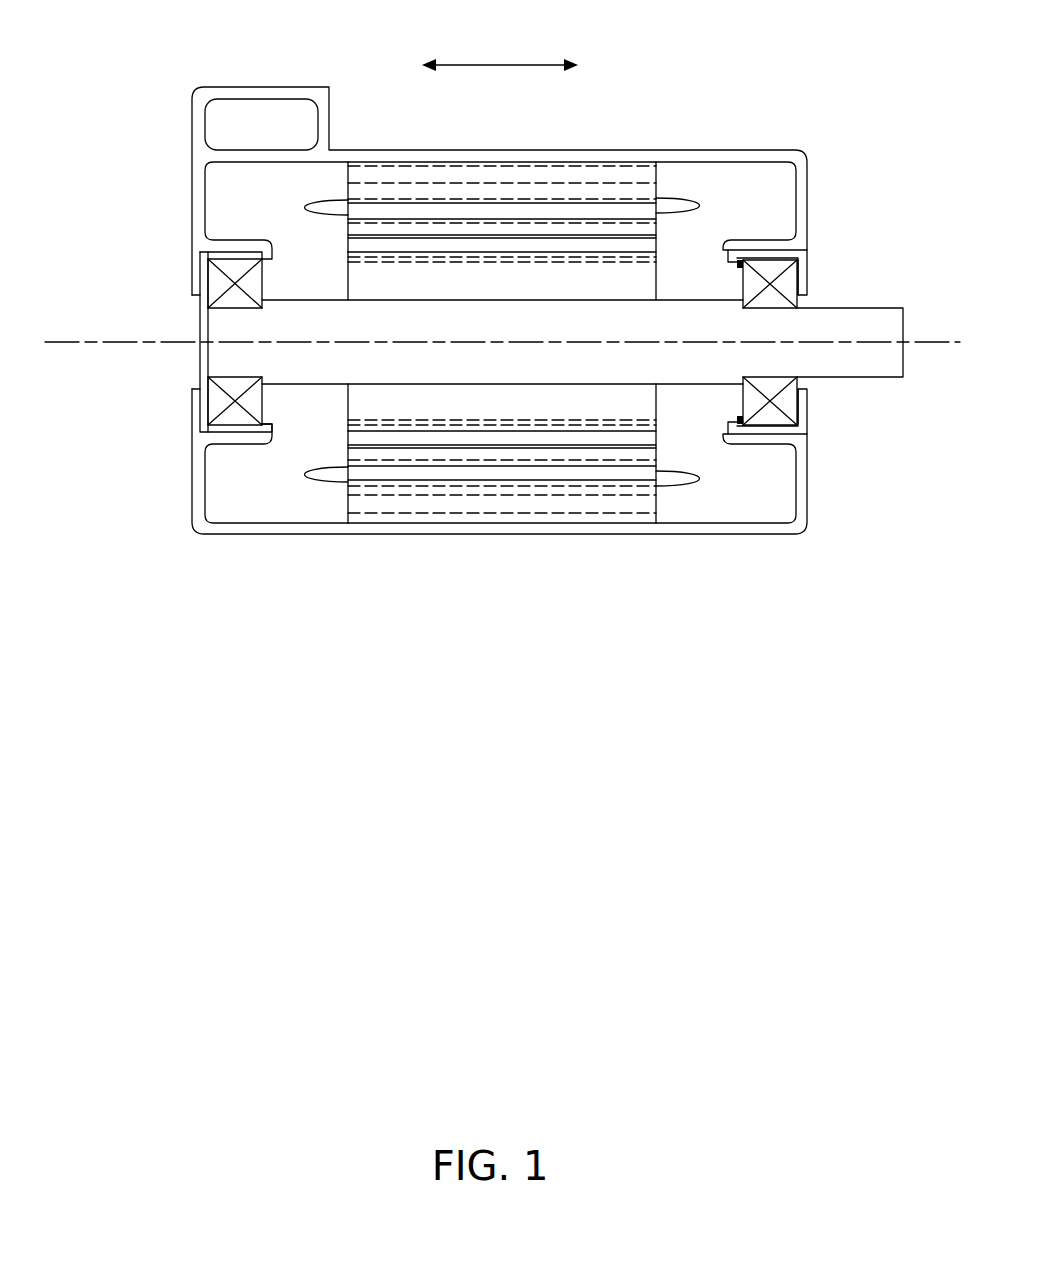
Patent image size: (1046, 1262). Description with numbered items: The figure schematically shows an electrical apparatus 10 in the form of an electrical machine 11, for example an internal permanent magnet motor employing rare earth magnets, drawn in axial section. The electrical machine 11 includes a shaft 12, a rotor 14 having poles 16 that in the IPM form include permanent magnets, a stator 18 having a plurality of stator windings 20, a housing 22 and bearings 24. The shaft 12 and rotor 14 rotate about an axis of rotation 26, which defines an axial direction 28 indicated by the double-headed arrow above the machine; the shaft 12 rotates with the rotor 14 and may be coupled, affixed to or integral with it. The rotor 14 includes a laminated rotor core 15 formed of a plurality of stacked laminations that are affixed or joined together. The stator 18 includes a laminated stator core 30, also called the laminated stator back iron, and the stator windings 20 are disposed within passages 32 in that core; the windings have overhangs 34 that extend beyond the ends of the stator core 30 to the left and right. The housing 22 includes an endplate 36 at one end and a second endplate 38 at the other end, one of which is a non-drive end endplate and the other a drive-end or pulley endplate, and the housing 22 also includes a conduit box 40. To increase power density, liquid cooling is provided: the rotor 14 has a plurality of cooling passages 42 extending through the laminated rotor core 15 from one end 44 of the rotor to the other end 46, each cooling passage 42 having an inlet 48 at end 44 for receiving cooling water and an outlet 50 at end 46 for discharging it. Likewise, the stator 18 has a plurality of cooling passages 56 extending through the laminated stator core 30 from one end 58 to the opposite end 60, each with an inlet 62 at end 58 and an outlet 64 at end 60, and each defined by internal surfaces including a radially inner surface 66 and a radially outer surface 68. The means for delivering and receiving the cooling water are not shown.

The electrical apparatus 10 is at (120, 102).
The electrical machine 11 is at (788, 100).
The shaft 12 is at (862, 308).
The rotor 14 is at (670, 384).
The laminated rotor core 15 is at (479, 414).
The poles 16 is at (656, 245).
The stator 18 is at (306, 454).
The stator windings 20 is at (430, 207).
The housing 22 is at (370, 592).
The bearings 24 is at (208, 298).
The axis of rotation 26 is at (74, 344).
The axial direction 28 is at (511, 63).
The laminated stator core 30 is at (348, 237).
The passages 32 is at (540, 488).
The overhangs 34 is at (303, 206).
The endplate 36 is at (192, 460).
The second endplate 38 is at (807, 460).
The conduit box 40 is at (332, 90).
The cooling passages 42 is at (617, 265).
The end 44 is at (656, 283).
The end 46 is at (348, 283).
The inlet 48 is at (656, 258).
The outlet 50 is at (348, 258).
The cooling passages 56 is at (622, 172).
The end 58 is at (656, 195).
The end 60 is at (348, 193).
The inlet 62 is at (678, 160).
The outlet 64 is at (340, 165).
The radially inner surface 66 is at (402, 183).
The radially outer surface 68 is at (550, 168).